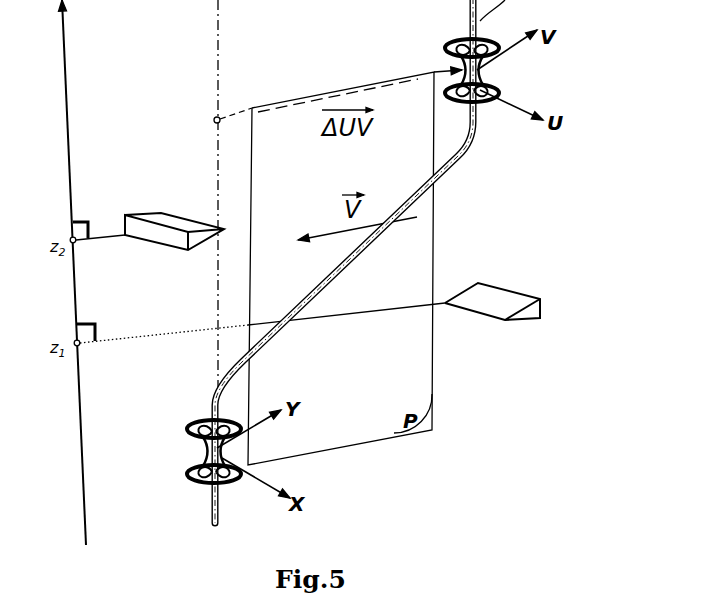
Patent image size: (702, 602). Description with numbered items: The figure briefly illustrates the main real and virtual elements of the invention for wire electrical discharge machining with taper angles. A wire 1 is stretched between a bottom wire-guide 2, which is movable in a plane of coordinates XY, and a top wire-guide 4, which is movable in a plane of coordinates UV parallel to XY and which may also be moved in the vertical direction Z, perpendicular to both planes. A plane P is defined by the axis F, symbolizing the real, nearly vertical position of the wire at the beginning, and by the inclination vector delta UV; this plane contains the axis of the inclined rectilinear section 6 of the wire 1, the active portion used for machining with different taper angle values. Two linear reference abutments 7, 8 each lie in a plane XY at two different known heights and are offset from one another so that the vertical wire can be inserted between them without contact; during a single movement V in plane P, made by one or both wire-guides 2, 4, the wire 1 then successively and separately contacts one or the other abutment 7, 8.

The wire 1 is at (209, 514).
The bottom wire-guide 2 is at (182, 418).
The top wire-guide 4 is at (458, 36).
The rectilinear section 6 is at (347, 263).
The linear reference abutment 7 is at (498, 283).
The linear reference abutment 8 is at (178, 176).